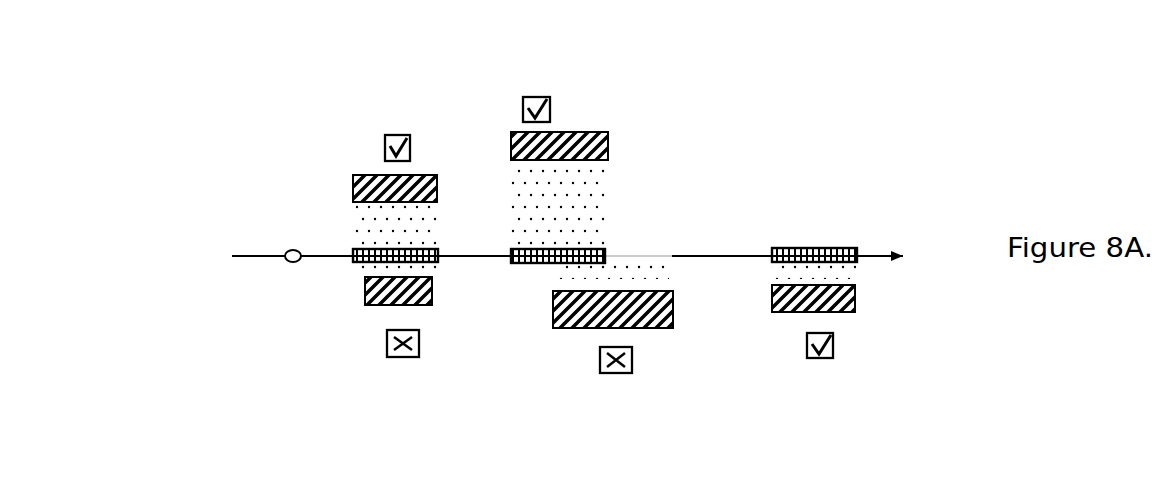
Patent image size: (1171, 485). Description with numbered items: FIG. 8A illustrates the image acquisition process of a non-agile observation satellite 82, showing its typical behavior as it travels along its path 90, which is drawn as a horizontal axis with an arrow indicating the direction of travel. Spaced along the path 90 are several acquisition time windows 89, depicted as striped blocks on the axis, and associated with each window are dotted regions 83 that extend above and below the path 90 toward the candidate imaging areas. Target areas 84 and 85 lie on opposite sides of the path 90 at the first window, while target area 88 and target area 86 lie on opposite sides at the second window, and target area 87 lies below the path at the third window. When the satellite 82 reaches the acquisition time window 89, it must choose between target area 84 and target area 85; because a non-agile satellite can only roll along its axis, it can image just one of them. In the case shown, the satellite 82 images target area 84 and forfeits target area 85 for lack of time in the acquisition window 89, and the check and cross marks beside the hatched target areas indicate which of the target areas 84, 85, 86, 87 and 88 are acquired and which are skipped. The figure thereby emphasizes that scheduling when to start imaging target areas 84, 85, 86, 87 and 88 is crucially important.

The non-agile observation satellite 82 is at (285, 248).
The time windows (dotted regions) 83 is at (803, 270).
The target area 84 is at (353, 187).
The target area 85 is at (365, 292).
The target area 86 is at (673, 313).
The target area 87 is at (853, 302).
The target area 88 is at (607, 143).
The acquisition time window 89 is at (353, 257).
The path 90 is at (592, 254).